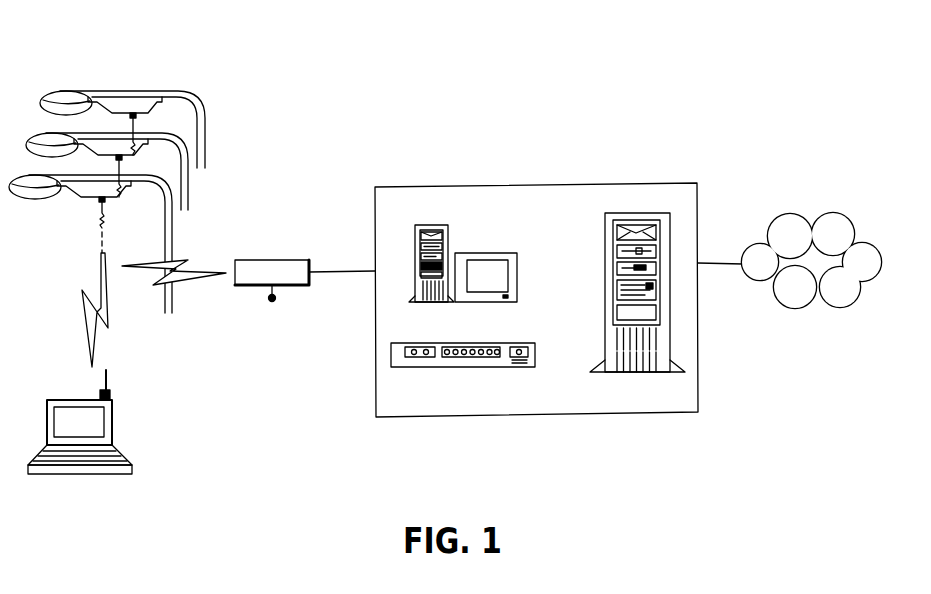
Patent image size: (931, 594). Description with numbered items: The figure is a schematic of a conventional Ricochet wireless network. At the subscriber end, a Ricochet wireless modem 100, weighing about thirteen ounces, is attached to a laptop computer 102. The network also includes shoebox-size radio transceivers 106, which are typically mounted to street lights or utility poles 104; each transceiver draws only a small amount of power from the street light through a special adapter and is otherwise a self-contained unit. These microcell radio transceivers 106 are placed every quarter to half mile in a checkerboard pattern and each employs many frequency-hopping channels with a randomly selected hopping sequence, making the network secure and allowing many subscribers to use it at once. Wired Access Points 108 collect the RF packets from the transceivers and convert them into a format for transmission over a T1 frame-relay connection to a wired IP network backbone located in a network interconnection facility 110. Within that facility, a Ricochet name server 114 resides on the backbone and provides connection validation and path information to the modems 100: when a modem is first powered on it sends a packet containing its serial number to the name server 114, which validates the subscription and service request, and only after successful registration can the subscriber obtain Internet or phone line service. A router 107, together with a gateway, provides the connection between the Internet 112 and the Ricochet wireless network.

The Ricochet wireless modem 100 is at (110, 388).
The laptop computer 102 is at (117, 450).
The street lights or utility poles 104 is at (65, 90).
The radio transceivers 106 is at (142, 97).
The router 107 is at (507, 367).
The Wired Access Points 108 is at (280, 287).
The network interconnection facility 110 is at (435, 187).
The Internet 112 is at (832, 215).
The name server 114 is at (503, 253).